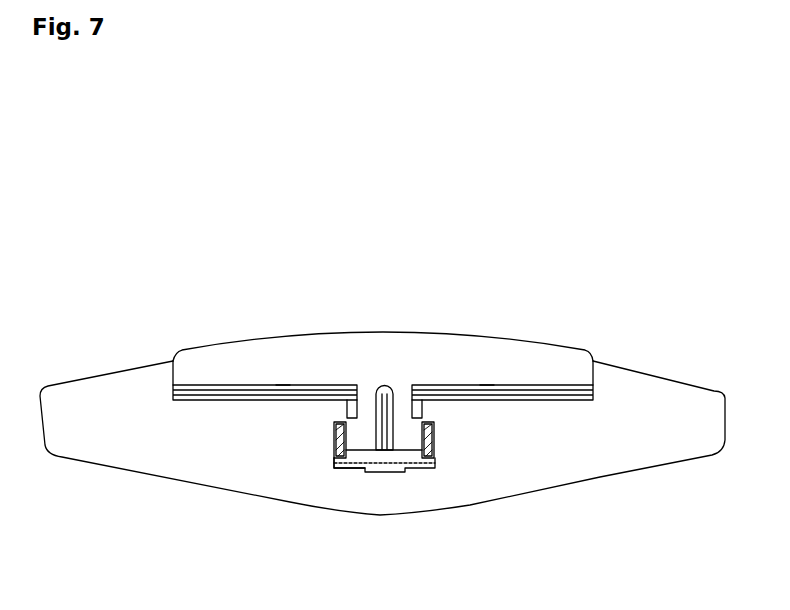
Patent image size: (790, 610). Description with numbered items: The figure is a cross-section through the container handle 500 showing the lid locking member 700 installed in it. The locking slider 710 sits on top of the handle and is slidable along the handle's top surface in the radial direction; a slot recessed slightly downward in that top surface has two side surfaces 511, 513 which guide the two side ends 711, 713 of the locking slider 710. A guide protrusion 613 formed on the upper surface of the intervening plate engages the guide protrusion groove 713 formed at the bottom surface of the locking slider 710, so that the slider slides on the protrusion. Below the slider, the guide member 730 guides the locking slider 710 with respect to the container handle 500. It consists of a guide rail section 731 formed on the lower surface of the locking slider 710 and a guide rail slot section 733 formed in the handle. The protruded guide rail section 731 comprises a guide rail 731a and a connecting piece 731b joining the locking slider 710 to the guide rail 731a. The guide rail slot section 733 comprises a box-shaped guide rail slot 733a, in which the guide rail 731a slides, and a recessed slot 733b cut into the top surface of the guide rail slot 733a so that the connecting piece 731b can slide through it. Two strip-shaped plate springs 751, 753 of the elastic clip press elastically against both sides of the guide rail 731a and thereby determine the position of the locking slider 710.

The lid locking member 700 is at (411, 250).
The locking slider 710 is at (387, 342).
The side end of locking slider / guide protrusion groove 713 is at (243, 333).
The side surface of slot 513 is at (184, 385).
The side end of locking slider 711 is at (521, 332).
The side surface of slot 511 is at (592, 386).
The guide protrusion 613 is at (283, 385).
The guide rail section 731 is at (270, 429).
The guide rail 731a is at (338, 440).
The connecting piece 731b is at (350, 411).
The guide rail slot section 733 is at (498, 435).
The guide rail slot 733a is at (410, 457).
The recessed slot 733b is at (420, 411).
The plate spring 751 is at (421, 437).
The plate spring 753 is at (338, 458).
The guide member 730 is at (250, 503).
The container handle 500 is at (382, 466).